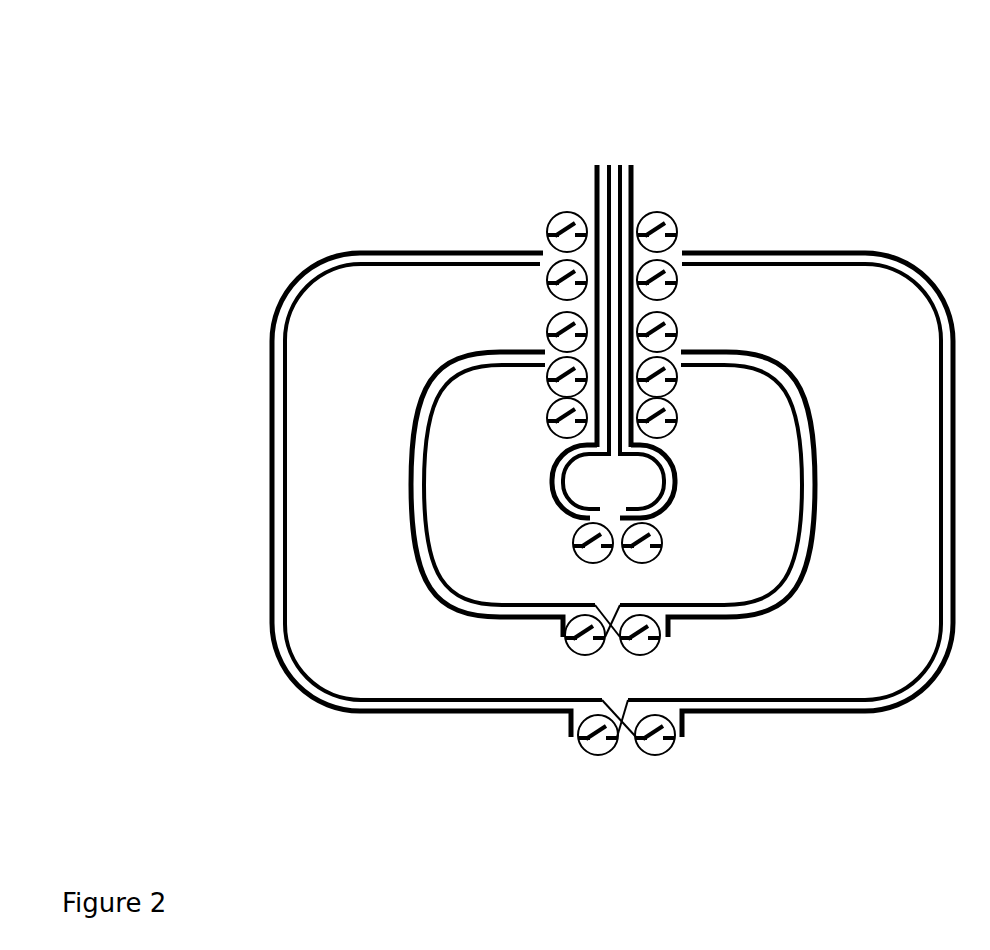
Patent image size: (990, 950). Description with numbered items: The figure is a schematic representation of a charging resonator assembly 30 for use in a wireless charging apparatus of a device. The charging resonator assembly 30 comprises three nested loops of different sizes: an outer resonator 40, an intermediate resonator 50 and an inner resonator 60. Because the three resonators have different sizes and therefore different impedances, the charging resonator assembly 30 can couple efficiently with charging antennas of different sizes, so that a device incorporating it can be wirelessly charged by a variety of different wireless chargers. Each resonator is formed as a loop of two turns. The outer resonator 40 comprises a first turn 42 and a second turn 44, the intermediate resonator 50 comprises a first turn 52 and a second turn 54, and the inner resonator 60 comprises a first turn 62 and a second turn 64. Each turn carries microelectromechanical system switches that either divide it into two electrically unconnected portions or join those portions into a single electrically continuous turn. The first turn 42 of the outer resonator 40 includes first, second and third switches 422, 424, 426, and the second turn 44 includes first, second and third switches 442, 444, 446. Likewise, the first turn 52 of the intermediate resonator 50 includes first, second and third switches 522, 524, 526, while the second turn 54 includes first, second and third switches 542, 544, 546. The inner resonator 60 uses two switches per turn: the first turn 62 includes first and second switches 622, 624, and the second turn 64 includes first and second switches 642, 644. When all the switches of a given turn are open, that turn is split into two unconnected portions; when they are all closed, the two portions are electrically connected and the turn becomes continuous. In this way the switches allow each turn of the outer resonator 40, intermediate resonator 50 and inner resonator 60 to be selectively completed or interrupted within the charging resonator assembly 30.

The charging resonator assembly 30 is at (293, 128).
The outer resonator 40 is at (612, 545).
The first turn of the outer resonator 42 is at (462, 716).
The second turn of the outer resonator 44 is at (420, 697).
The intermediate resonator 50 is at (618, 512).
The first turn of the intermediate resonator 52 is at (425, 418).
The second turn of the intermediate resonator 54 is at (808, 412).
The inner resonator 60 is at (596, 481).
The first turn of the inner resonator 62 is at (547, 493).
The second turn of the inner resonator 64 is at (590, 512).
The first MEMS switch of the first turn of the outer resonator 422 is at (678, 280).
The second MEMS switch of the first turn of the outer resonator 424 is at (590, 755).
The third MEMS switch of the first turn of the outer resonator 426 is at (567, 222).
The first MEMS switch of the second turn of the outer resonator 442 is at (655, 222).
The second MEMS switch of the second turn of the outer resonator 444 is at (655, 755).
The third MEMS switch of the second turn of the outer resonator 446 is at (546, 278).
The first MEMS switch of the first turn of the intermediate resonator 522 is at (547, 333).
The second MEMS switch of the first turn of the intermediate resonator 524 is at (678, 385).
The third MEMS switch of the first turn of the intermediate resonator 526 is at (583, 656).
The first MEMS switch of the second turn of the intermediate resonator 542 is at (678, 333).
The second MEMS switch of the second turn of the intermediate resonator 544 is at (650, 656).
The third MEMS switch of the second turn of the intermediate resonator 546 is at (548, 381).
The first MEMS switch of the first turn of the inner resonator 622 is at (548, 420).
The second MEMS switch of the first turn of the inner resonator 624 is at (582, 563).
The first MEMS switch of the second turn of the inner resonator 642 is at (678, 422).
The second MEMS switch of the second turn of the inner resonator 644 is at (653, 563).